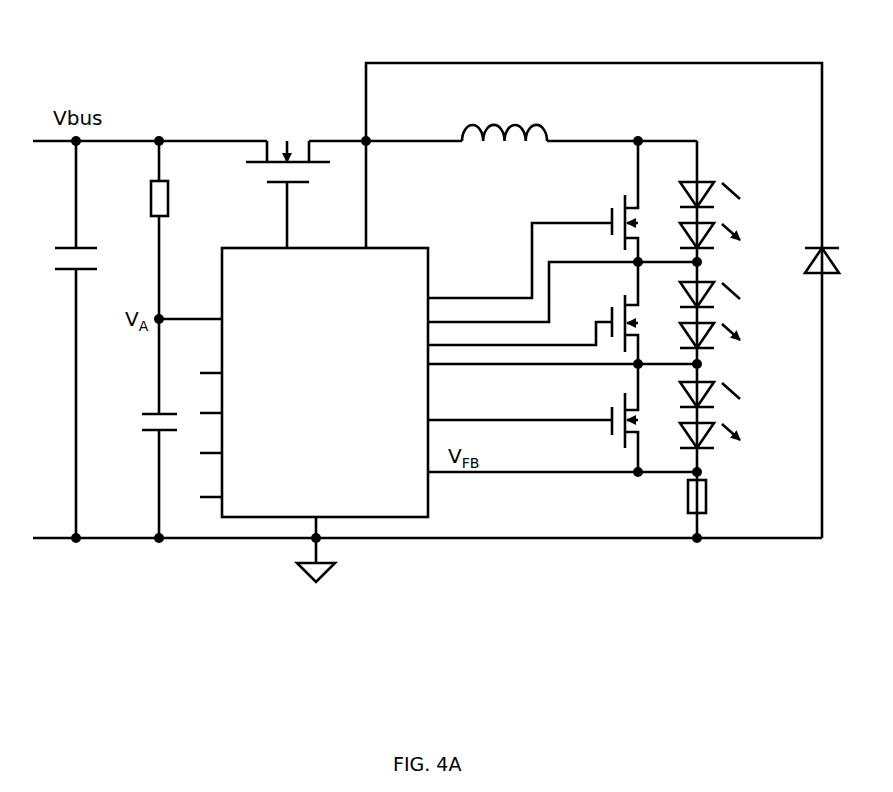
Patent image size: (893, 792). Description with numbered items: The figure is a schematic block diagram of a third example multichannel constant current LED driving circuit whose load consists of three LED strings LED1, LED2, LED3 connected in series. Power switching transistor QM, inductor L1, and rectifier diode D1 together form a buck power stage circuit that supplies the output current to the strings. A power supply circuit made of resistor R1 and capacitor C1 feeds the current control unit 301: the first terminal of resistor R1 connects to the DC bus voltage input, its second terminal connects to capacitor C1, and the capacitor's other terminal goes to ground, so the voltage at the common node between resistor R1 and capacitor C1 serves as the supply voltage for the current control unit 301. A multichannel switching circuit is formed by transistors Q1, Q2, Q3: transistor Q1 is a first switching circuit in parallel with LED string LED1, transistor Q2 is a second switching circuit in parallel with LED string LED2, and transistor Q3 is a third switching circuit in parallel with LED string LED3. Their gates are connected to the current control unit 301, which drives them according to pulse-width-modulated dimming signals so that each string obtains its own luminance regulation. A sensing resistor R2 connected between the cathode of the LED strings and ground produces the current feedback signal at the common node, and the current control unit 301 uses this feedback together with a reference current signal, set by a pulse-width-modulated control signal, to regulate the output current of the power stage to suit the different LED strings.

The current control unit 301 is at (314, 415).
The resistor R1 is at (145, 230).
The capacitor C1 is at (145, 428).
The power switching transistor QM is at (288, 180).
The inductor L1 is at (504, 121).
The transistor Q1 is at (609, 201).
The transistor Q2 is at (609, 313).
The transistor Q3 is at (609, 418).
The LED string LED1 is at (737, 215).
The LED string LED2 is at (737, 315).
The LED string LED3 is at (737, 415).
The rectifier diode D1 is at (839, 259).
The sensing resistor R2 is at (713, 496).